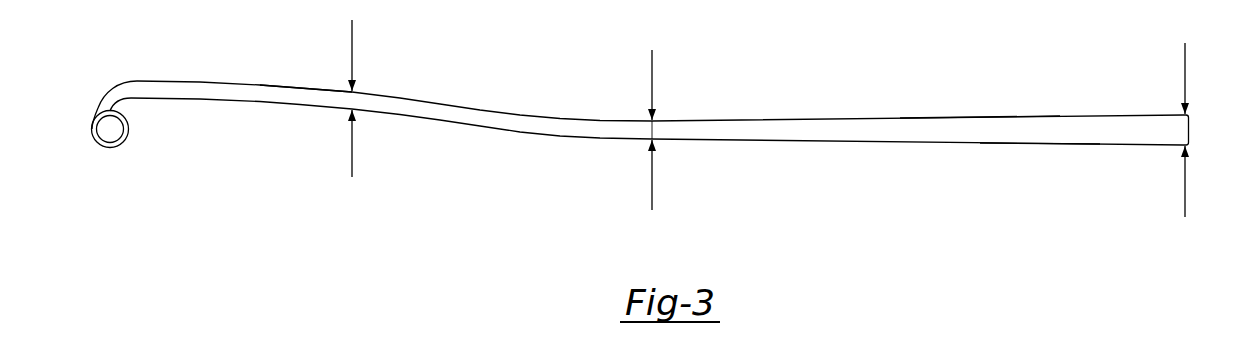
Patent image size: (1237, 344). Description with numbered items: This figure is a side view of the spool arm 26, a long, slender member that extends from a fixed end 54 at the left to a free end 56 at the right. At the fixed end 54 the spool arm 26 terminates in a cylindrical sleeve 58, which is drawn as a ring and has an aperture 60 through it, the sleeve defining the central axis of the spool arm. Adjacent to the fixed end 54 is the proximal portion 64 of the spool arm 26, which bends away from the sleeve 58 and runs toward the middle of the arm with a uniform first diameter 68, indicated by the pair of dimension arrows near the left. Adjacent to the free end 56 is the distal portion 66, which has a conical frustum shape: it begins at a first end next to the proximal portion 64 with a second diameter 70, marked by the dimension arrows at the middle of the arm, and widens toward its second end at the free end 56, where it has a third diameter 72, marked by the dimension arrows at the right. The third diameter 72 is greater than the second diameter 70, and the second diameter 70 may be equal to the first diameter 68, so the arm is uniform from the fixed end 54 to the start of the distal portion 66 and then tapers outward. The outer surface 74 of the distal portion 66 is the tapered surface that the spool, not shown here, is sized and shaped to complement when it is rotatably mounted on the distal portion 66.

The spool arm 26 is at (1110, 50).
The fixed end 54 is at (93, 101).
The free end 56 is at (1194, 120).
The cylindrical sleeve 58 is at (108, 132).
The aperture 60 is at (120, 146).
The proximal portion 64 is at (337, 88).
The distal portion 66 is at (979, 114).
The first diameter 68 is at (351, 117).
The second diameter 70 is at (651, 143).
The third diameter 72 is at (1183, 144).
The outer surface 74 is at (1053, 137).